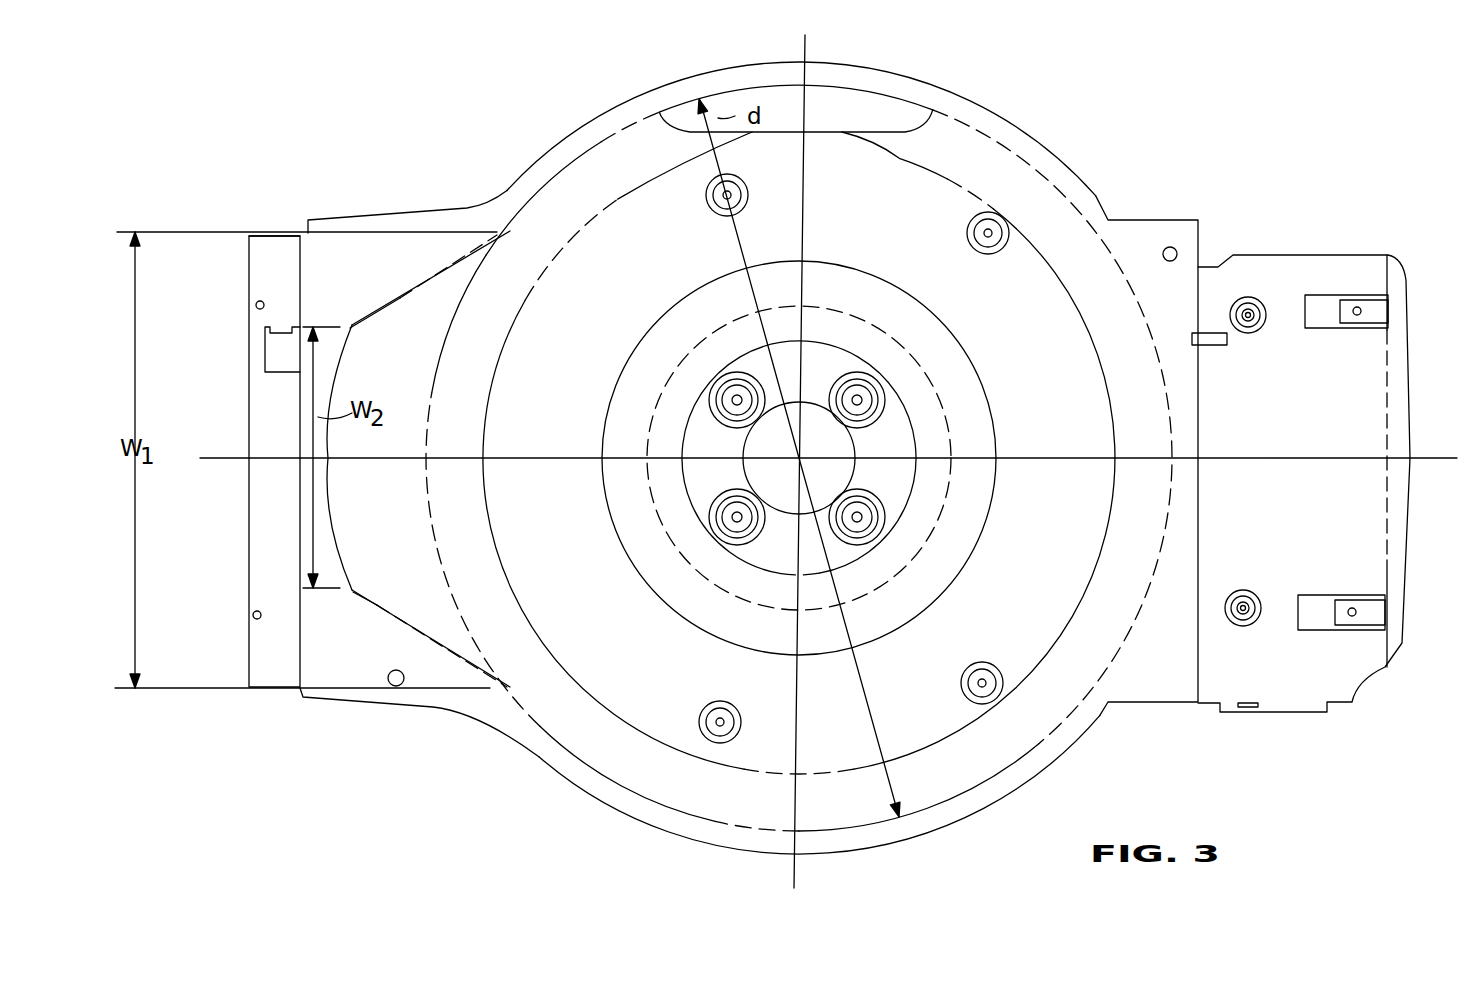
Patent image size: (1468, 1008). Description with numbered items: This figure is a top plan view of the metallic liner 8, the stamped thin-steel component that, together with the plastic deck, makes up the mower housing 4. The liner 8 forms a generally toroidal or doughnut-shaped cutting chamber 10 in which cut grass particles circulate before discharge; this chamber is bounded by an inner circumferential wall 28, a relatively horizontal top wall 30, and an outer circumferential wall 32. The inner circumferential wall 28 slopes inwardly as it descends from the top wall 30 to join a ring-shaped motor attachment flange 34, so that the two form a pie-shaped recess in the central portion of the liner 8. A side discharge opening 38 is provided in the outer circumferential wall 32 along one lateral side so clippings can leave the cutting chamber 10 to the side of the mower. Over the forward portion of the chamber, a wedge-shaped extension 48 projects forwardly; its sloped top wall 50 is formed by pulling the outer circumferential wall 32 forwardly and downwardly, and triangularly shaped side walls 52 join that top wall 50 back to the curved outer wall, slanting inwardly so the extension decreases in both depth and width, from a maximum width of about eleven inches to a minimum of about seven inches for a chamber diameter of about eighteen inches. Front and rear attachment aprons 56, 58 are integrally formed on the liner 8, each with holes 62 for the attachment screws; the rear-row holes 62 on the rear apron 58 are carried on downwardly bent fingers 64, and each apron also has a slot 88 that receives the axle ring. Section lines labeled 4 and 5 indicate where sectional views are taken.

The mower housing 4 is at (1455, 412).
The section line 5- 5 is at (750, 888).
The metallic liner 8 is at (1046, 92).
The cutting chamber 10 is at (984, 93).
The inner circumferential wall 28 is at (857, 283).
The top wall 30 is at (1017, 290).
The outer circumferential wall 32 is at (893, 93).
The motor attachment flange 34 is at (823, 378).
The side discharge opening 38 is at (840, 105).
The wedge-shaped extension 48 is at (392, 254).
The top wall of extension 50 is at (355, 500).
The side walls 52 is at (448, 267).
The front attachment apron 56 is at (286, 220).
The rear attachment apron 58 is at (1306, 250).
The holes 62 is at (1248, 315).
The fingers 64 is at (1373, 313).
The slot 88 is at (1212, 345).